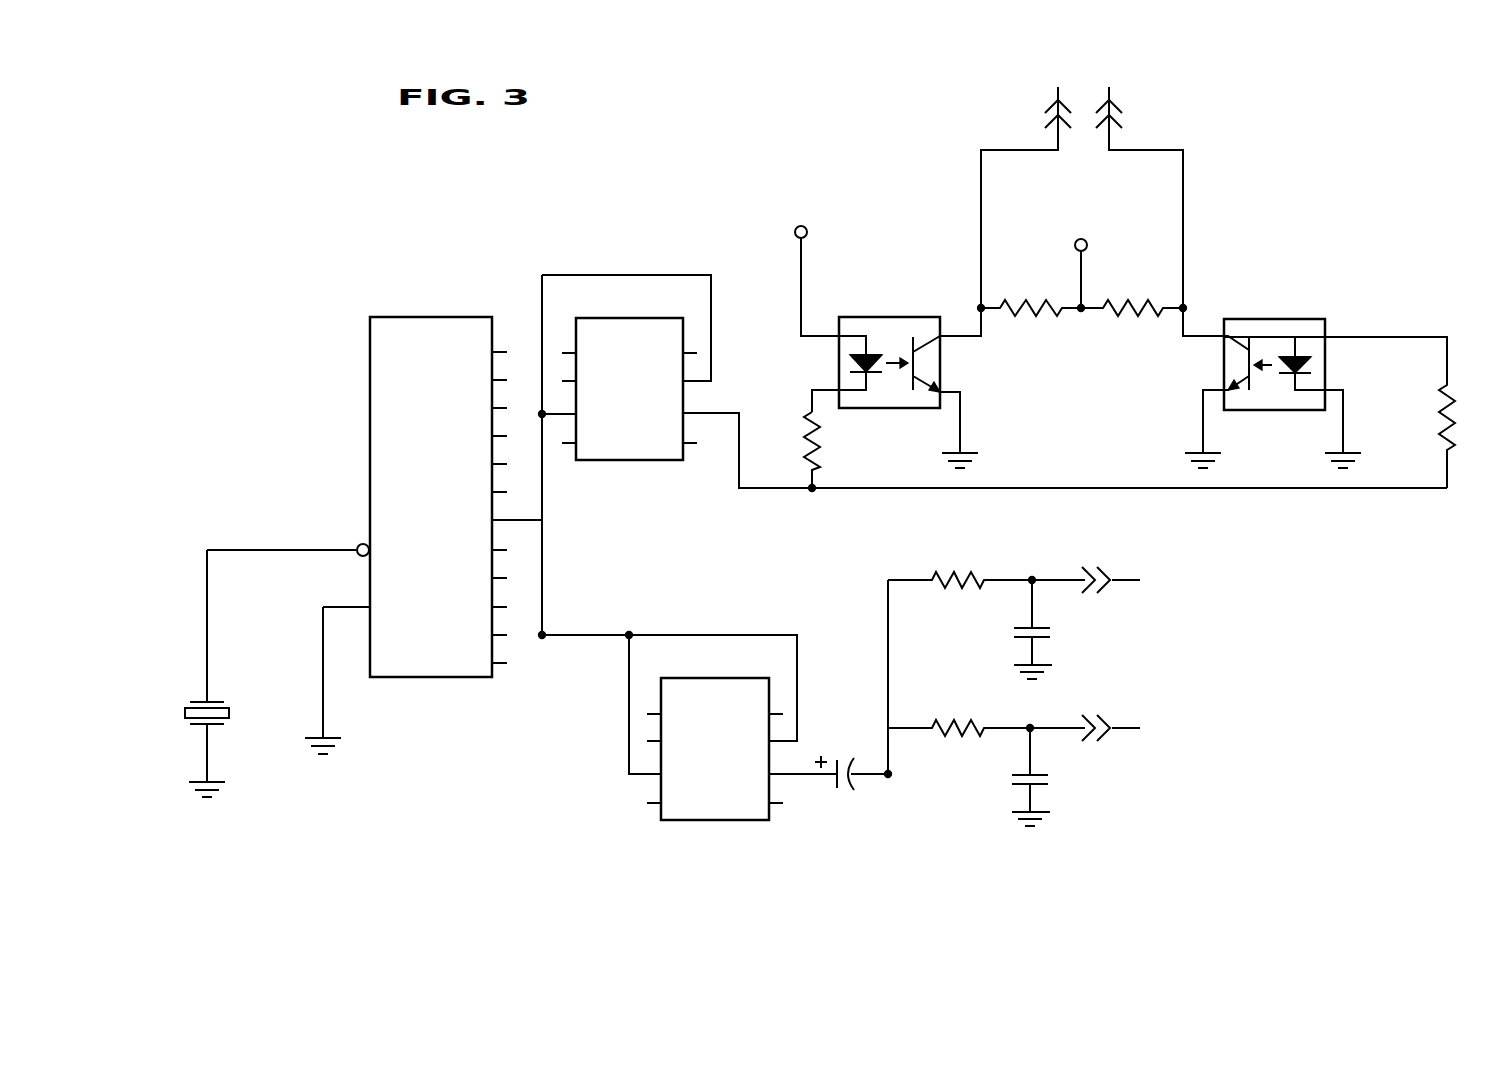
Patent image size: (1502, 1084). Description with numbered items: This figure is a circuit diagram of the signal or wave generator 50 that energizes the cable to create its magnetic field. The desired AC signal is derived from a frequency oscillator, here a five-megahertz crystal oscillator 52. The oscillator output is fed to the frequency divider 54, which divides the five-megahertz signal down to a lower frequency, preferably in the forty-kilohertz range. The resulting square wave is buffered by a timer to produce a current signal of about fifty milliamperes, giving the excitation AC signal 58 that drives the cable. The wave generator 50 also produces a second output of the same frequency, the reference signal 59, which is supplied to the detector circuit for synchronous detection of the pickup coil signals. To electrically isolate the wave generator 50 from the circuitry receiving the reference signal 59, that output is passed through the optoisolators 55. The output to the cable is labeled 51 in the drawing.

The wave generator 50 is at (828, 463).
The output signal to cable 51 is at (1013, 670).
The crystal oscillator 52 is at (236, 673).
The 4020 frequency divider 54 is at (357, 523).
The 6N136 optoisolators 55 is at (1141, 284).
The AC signal 58 is at (673, 739).
The reference signal 59 is at (1065, 467).